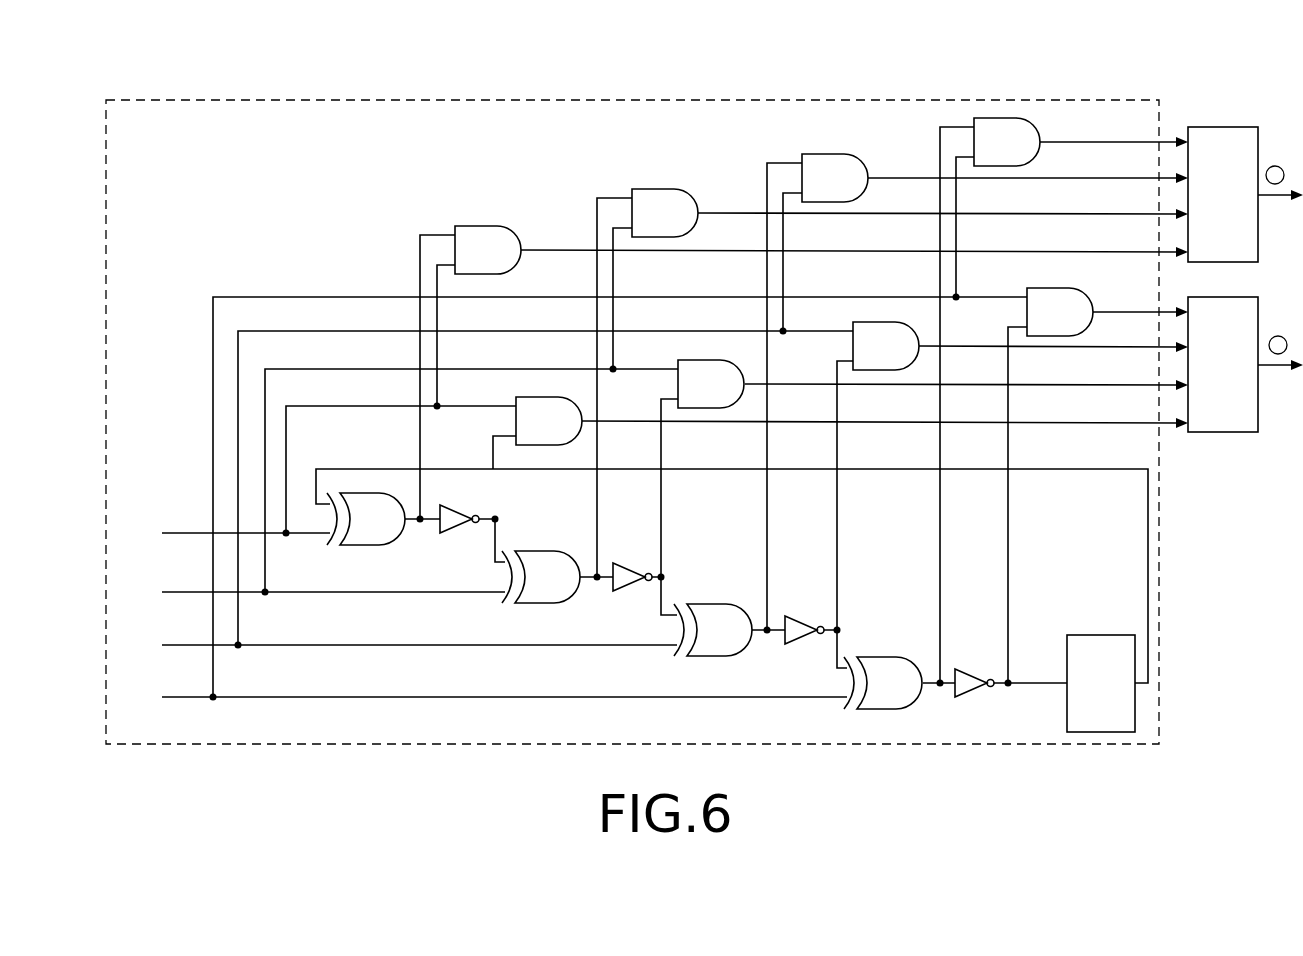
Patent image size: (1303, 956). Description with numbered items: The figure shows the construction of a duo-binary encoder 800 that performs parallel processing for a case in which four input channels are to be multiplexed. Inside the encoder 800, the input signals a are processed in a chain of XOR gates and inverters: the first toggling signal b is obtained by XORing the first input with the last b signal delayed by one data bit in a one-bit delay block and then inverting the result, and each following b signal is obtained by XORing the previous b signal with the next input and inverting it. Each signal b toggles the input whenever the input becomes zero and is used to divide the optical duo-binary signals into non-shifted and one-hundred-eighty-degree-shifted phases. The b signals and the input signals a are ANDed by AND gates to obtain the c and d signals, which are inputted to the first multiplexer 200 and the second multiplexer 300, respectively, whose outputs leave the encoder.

The duo-binary encoder 800 is at (632, 100).
The first multiplexer 200 is at (1226, 127).
The second multiplexer 300 is at (1226, 297).